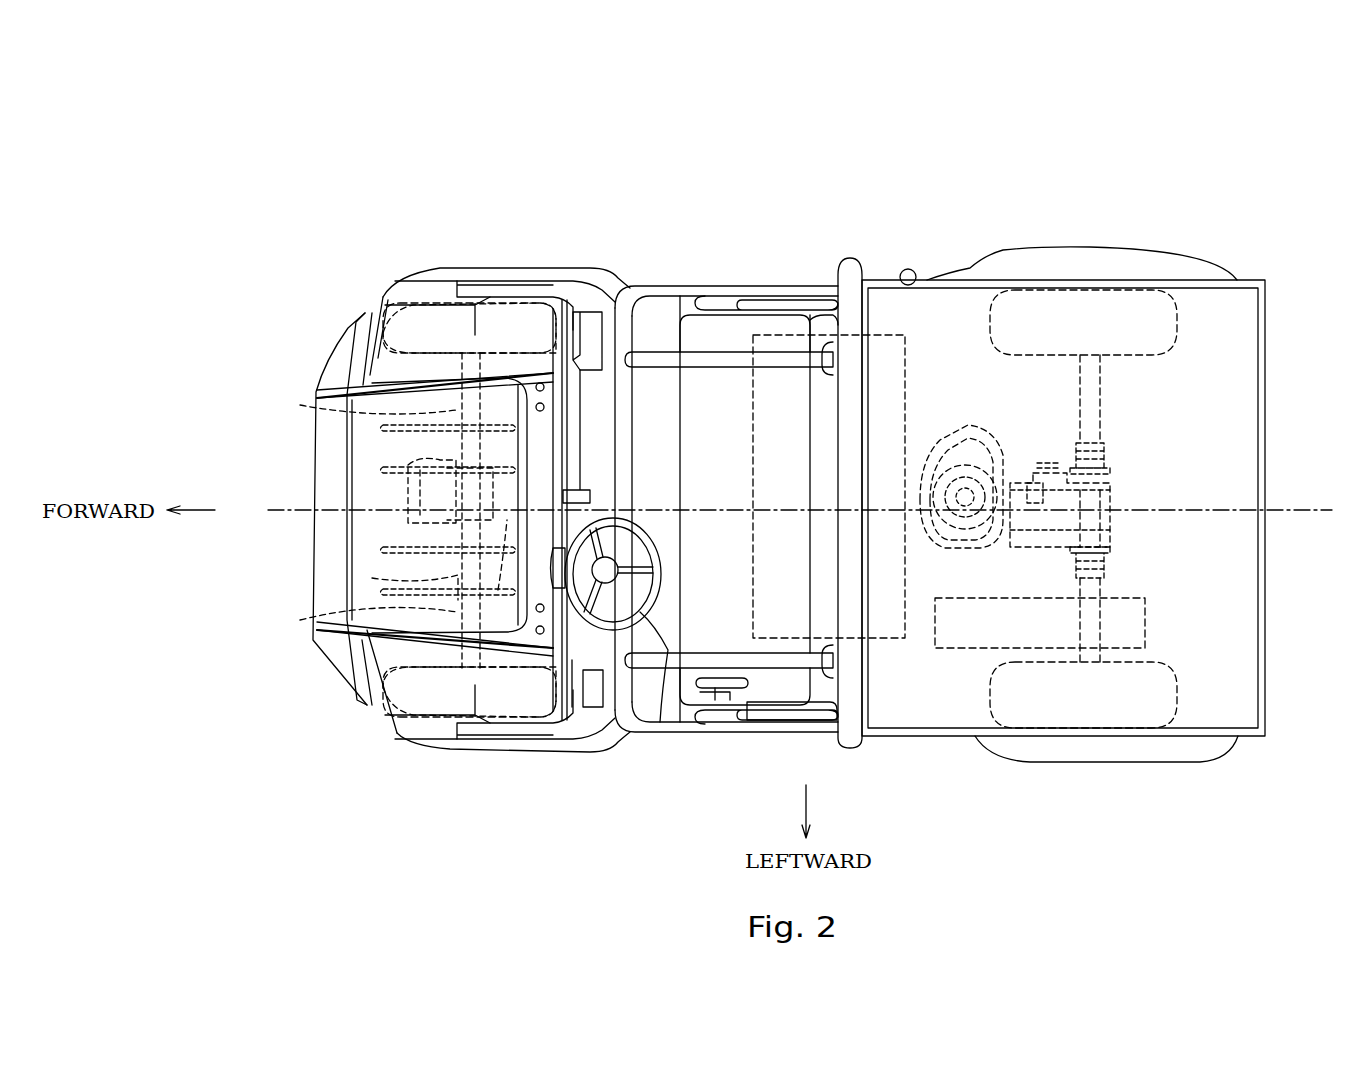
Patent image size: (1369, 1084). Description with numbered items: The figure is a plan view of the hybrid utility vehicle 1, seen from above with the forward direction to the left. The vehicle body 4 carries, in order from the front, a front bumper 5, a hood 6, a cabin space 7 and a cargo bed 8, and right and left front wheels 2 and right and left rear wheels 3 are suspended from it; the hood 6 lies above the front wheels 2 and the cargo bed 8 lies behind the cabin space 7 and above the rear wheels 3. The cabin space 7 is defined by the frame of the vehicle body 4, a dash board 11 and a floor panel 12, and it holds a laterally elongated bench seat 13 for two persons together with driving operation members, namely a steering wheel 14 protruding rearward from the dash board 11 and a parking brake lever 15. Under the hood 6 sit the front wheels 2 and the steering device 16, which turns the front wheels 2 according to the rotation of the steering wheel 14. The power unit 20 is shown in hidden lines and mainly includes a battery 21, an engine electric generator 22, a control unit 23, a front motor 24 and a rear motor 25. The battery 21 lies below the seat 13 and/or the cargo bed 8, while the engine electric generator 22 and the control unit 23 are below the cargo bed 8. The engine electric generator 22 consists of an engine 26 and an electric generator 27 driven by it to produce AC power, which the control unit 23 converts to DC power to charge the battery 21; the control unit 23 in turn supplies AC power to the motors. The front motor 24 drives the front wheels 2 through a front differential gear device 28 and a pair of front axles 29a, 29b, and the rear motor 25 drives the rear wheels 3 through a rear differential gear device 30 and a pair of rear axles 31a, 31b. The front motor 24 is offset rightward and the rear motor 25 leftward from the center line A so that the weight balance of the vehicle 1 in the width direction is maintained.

The utility vehicle 1 is at (1315, 168).
The front wheel 2 is at (430, 278).
The rear wheel 3 is at (1218, 305).
The vehicle body 4 is at (848, 288).
The front bumper 5 is at (348, 323).
The hood 6 is at (520, 318).
The cabin space 7 is at (660, 333).
The cargo bed 8 is at (890, 279).
The dash board 11 is at (615, 737).
The floor panel 12 is at (645, 700).
The seat 13 is at (730, 327).
The steering wheel 14 is at (640, 625).
The parking brake lever 15 is at (715, 690).
The steering device 16 is at (498, 590).
The power unit 20 is at (385, 583).
The battery 21 is at (893, 334).
The engine electric generator 22 is at (983, 430).
The control unit 23 is at (1148, 633).
The front motor 24 is at (365, 485).
The rear motor 25 is at (1028, 550).
The engine 26 is at (940, 540).
The electric generator 27 is at (962, 535).
The front differential gear device 28 is at (355, 520).
The front axle 29a is at (358, 563).
The front axle 29b is at (360, 408).
The rear differential gear device 30 is at (1110, 478).
The rear axle 31a is at (1113, 560).
The rear axle 31b is at (1110, 452).
The center line A is at (1297, 508).